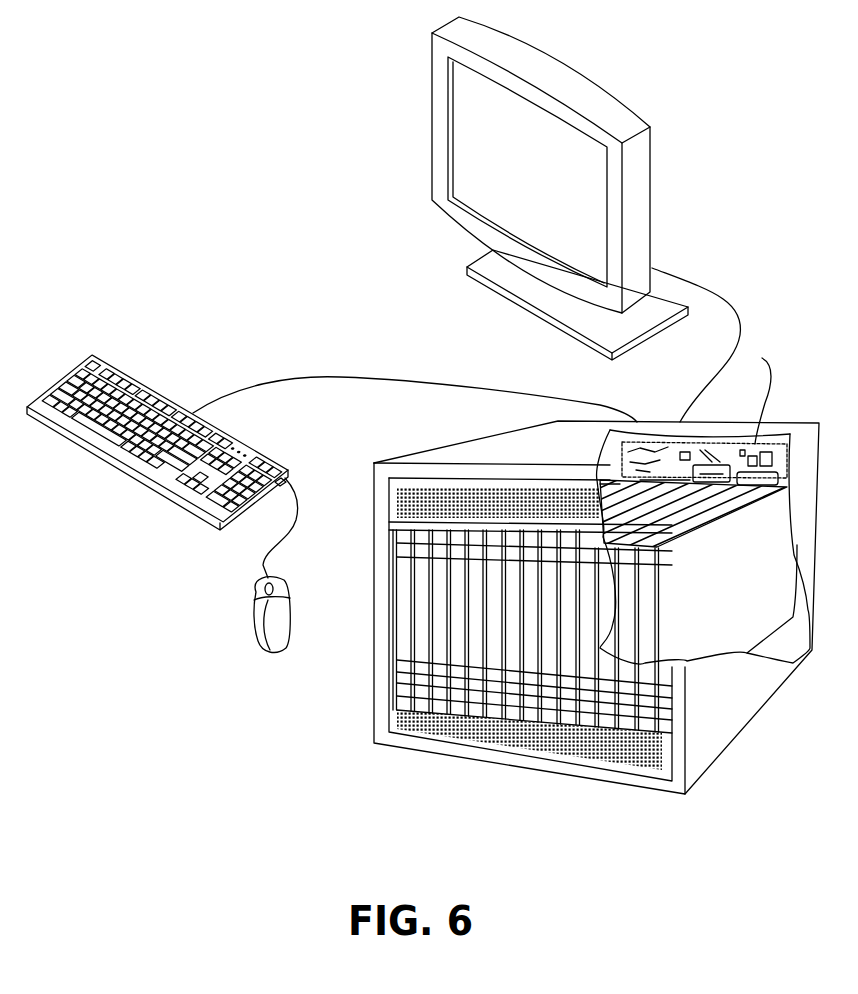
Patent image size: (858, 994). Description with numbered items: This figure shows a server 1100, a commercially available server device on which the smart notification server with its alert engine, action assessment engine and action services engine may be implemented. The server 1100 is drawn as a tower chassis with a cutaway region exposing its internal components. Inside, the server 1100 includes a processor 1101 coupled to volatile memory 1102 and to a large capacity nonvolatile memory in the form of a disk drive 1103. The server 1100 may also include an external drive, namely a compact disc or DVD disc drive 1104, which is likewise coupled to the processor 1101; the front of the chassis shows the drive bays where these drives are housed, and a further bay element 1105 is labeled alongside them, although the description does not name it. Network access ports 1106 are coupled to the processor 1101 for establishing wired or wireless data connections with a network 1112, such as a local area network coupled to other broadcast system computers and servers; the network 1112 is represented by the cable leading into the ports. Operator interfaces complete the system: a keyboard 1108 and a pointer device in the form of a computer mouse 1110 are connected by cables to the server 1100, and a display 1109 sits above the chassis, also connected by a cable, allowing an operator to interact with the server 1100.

The server 1100 is at (455, 445).
The processor 1101 is at (623, 473).
The volatile memory 1102 is at (775, 477).
The disk drive 1103 is at (440, 579).
The compact disc (CD) or DVD disc drive 1104 is at (403, 632).
The drive bay 1105 is at (418, 605).
The network access ports 1106 is at (716, 468).
The keyboard 1108 is at (155, 388).
The display 1109 is at (652, 218).
The computer mouse 1110 is at (260, 637).
The network 1112 is at (793, 352).